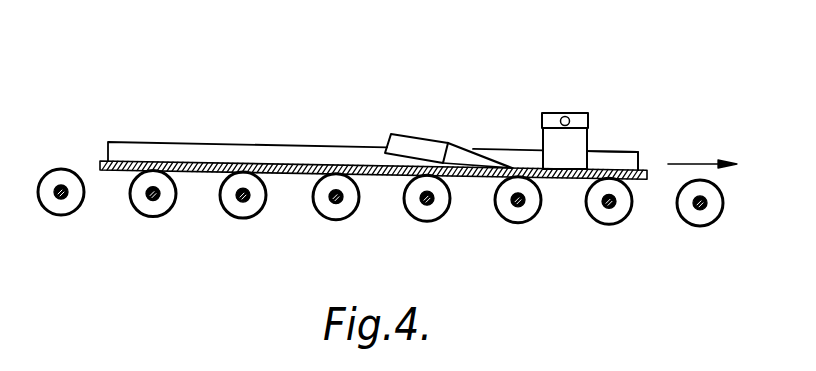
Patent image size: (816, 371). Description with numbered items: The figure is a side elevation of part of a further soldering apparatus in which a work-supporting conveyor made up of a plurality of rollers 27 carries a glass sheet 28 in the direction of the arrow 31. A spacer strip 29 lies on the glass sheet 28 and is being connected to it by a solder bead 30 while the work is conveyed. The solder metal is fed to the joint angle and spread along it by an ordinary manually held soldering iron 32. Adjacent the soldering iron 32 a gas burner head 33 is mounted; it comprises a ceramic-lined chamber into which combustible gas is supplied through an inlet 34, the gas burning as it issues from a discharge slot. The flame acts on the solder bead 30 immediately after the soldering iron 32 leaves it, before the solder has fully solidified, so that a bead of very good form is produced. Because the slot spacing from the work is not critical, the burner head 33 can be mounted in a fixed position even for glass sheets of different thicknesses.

The rollers 27 is at (602, 214).
The glass sheet 28 is at (283, 172).
The spacer strip 29 is at (202, 156).
The solder bead 30 is at (620, 165).
The arrow 31 is at (687, 165).
The soldering iron 32 is at (458, 160).
The gas burner head 33 is at (602, 137).
The inlet 34 is at (565, 113).